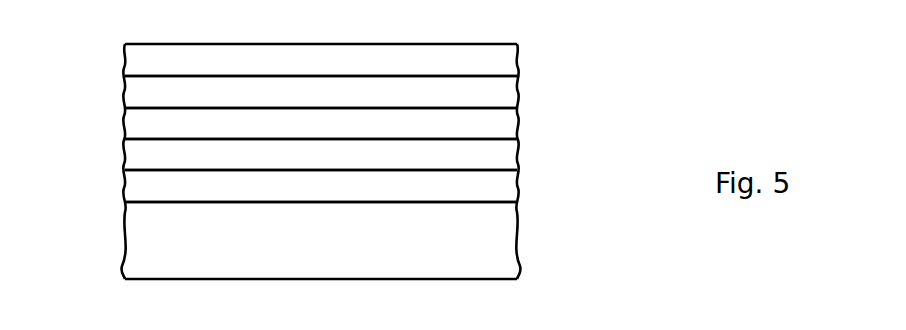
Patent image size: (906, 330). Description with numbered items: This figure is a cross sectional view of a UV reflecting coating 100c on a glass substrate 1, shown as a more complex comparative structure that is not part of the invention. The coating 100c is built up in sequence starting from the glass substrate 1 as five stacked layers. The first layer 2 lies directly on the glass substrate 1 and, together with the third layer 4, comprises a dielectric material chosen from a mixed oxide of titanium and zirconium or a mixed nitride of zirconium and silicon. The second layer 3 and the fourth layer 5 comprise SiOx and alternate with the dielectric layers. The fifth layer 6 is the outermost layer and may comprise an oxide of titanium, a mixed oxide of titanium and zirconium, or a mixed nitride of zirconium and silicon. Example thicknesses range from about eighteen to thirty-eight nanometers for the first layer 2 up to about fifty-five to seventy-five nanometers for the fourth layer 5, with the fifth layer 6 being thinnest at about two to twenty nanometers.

The glass substrate 1 is at (140, 265).
The first layer 2 is at (140, 192).
The second layer 3 is at (140, 157).
The third layer 4 is at (140, 124).
The fourth layer 5 is at (140, 92).
The fifth layer 6 is at (140, 59).
The coating 100c is at (363, 114).